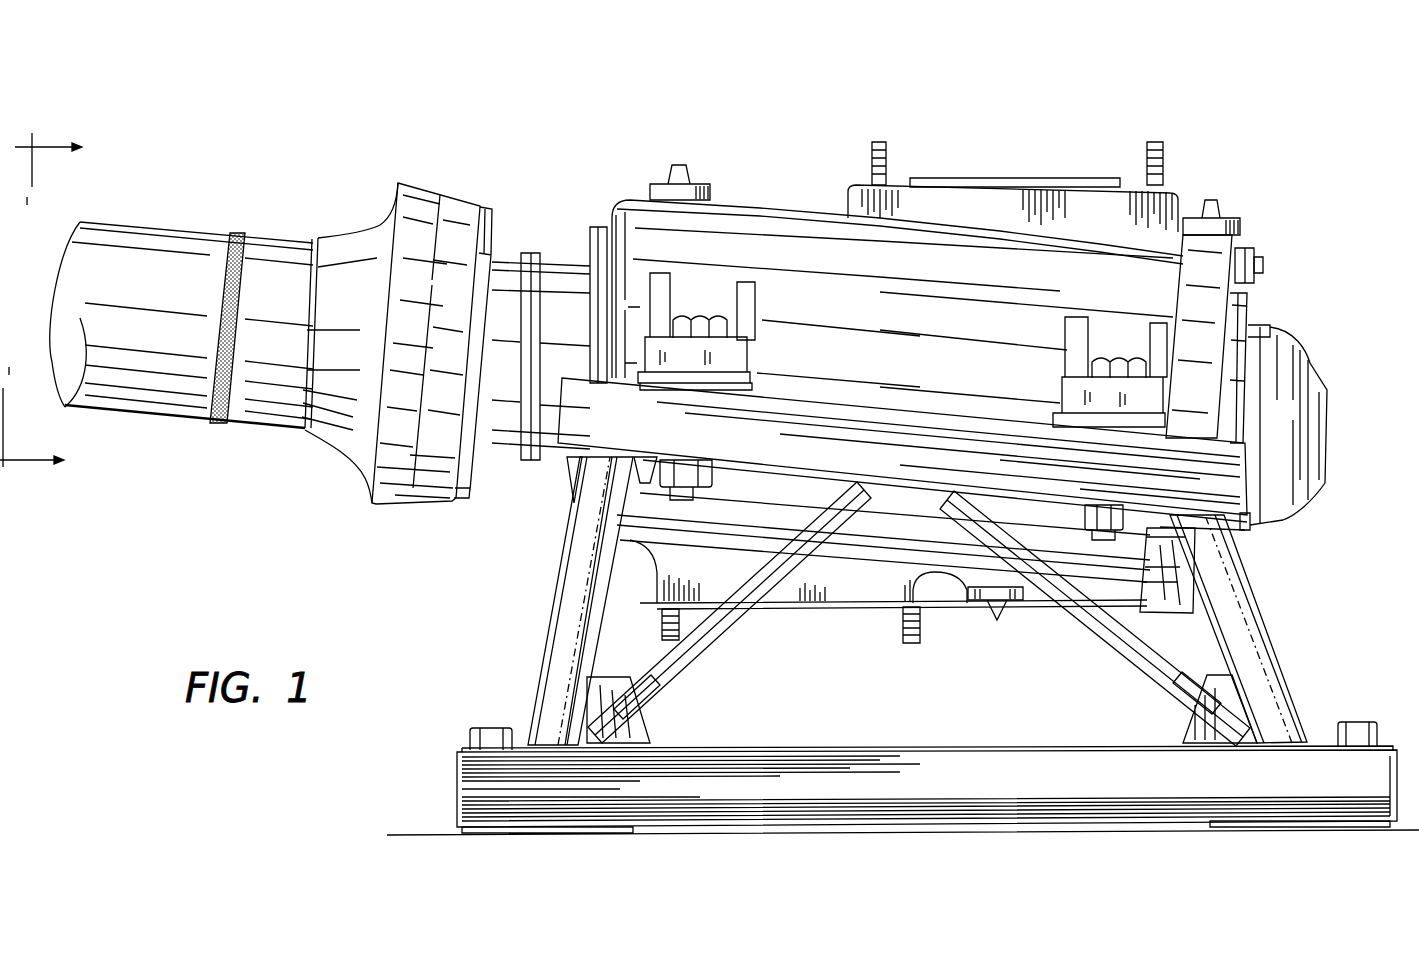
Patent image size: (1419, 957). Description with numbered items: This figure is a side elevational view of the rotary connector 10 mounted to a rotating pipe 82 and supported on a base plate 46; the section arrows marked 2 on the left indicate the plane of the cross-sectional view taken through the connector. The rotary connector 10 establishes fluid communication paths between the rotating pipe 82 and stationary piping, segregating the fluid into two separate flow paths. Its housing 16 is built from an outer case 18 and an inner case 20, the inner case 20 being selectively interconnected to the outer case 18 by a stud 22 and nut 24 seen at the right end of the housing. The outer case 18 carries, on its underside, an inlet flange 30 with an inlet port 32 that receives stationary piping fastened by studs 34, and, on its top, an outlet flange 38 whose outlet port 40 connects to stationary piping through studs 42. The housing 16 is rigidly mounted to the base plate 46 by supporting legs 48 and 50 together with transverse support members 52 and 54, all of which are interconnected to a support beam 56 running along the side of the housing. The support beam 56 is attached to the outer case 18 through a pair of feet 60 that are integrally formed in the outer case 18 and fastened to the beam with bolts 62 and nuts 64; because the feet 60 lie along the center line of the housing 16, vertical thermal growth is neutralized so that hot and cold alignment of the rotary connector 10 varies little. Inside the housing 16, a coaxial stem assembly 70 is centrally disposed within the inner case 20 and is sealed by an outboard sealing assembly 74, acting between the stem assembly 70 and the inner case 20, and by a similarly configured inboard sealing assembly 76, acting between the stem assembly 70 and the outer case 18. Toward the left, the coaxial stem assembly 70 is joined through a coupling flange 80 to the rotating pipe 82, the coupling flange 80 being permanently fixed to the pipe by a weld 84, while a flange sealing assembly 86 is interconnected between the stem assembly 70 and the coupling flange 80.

The section line 2- 2 is at (55, 304).
The rotary connector 10 is at (518, 552).
The housing 16 is at (798, 190).
The outer case 18 is at (912, 326).
The inner case 20 is at (1182, 346).
The stud 22 is at (1268, 266).
The nut 24 is at (1246, 250).
The inlet flange 30 is at (838, 589).
The inlet port 32 is at (812, 615).
The studs 34 is at (660, 628).
The outlet flange 38 is at (1078, 224).
The outlet port 40 is at (1078, 183).
The studs 42 is at (887, 162).
The base plate 46 is at (988, 777).
The supporting leg 48 is at (553, 651).
The supporting leg 50 is at (1257, 643).
The transverse support member 52 is at (683, 666).
The transverse support member 54 is at (1128, 642).
The support beam 56 is at (598, 420).
The feet 60 is at (732, 357).
The bolts 62 is at (697, 325).
The nuts 64 is at (705, 473).
The coaxial stem assembly 70 is at (1317, 365).
The outboard sealing assembly 74 is at (1256, 307).
The inboard sealing assembly 76 is at (548, 243).
The coupling flange 80 is at (418, 200).
The rotating pipe 82 is at (170, 257).
The weld 84 is at (240, 238).
The flange sealing assembly 86 is at (512, 222).